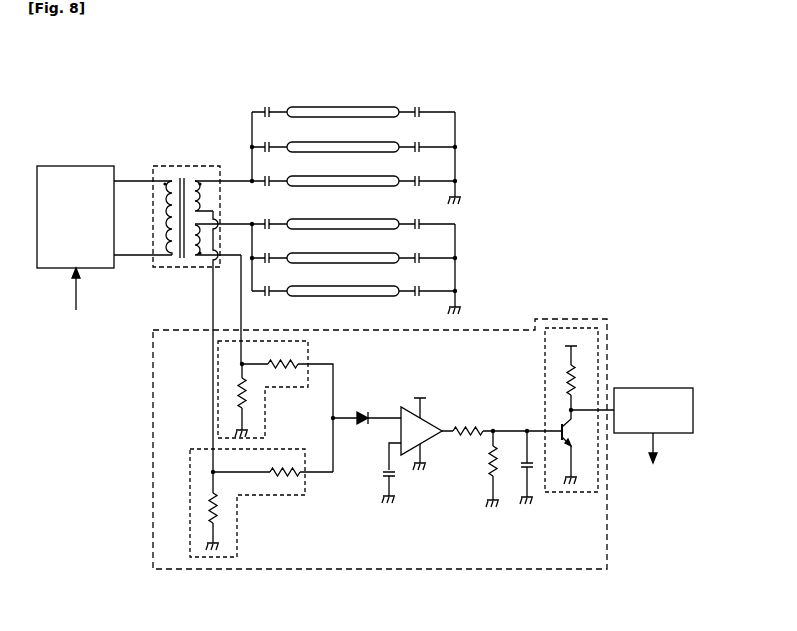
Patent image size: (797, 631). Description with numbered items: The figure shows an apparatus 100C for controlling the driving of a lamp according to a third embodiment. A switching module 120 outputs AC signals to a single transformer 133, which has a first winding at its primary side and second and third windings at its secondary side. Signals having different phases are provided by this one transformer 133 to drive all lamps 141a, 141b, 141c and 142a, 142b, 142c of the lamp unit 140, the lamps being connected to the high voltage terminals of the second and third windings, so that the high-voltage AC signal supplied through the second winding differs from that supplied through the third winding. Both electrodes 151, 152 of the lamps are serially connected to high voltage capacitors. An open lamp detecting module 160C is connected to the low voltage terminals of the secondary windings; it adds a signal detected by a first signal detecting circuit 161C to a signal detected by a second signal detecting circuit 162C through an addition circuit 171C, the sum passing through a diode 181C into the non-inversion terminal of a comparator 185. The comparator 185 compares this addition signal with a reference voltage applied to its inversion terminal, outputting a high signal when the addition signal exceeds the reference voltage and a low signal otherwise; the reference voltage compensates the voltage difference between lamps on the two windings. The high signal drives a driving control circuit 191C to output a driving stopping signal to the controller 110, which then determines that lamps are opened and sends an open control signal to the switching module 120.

The apparatus for controlling driving of a lamp 100C is at (108, 43).
The switching module 120 is at (76, 166).
The transformer 133 is at (186, 166).
The lamp unit 140 is at (327, 91).
The first electrodes 151 is at (283, 106).
The electrodes 152 is at (406, 106).
The lamp 141a is at (333, 110).
The lamp 141b is at (333, 145).
The lamp 141c is at (333, 179).
The lamp 142a is at (333, 222).
The lamp 142b is at (333, 256).
The lamp 142c is at (333, 289).
The open lamp detecting module 160C is at (421, 570).
The first signal detecting circuit 161C is at (240, 521).
The second signal detecting circuit 162C is at (218, 366).
The addition circuit 171C is at (336, 416).
The diode 181C is at (363, 427).
The comparator 185 is at (401, 405).
The driving control circuit 191C is at (572, 326).
The controller 110 is at (653, 388).